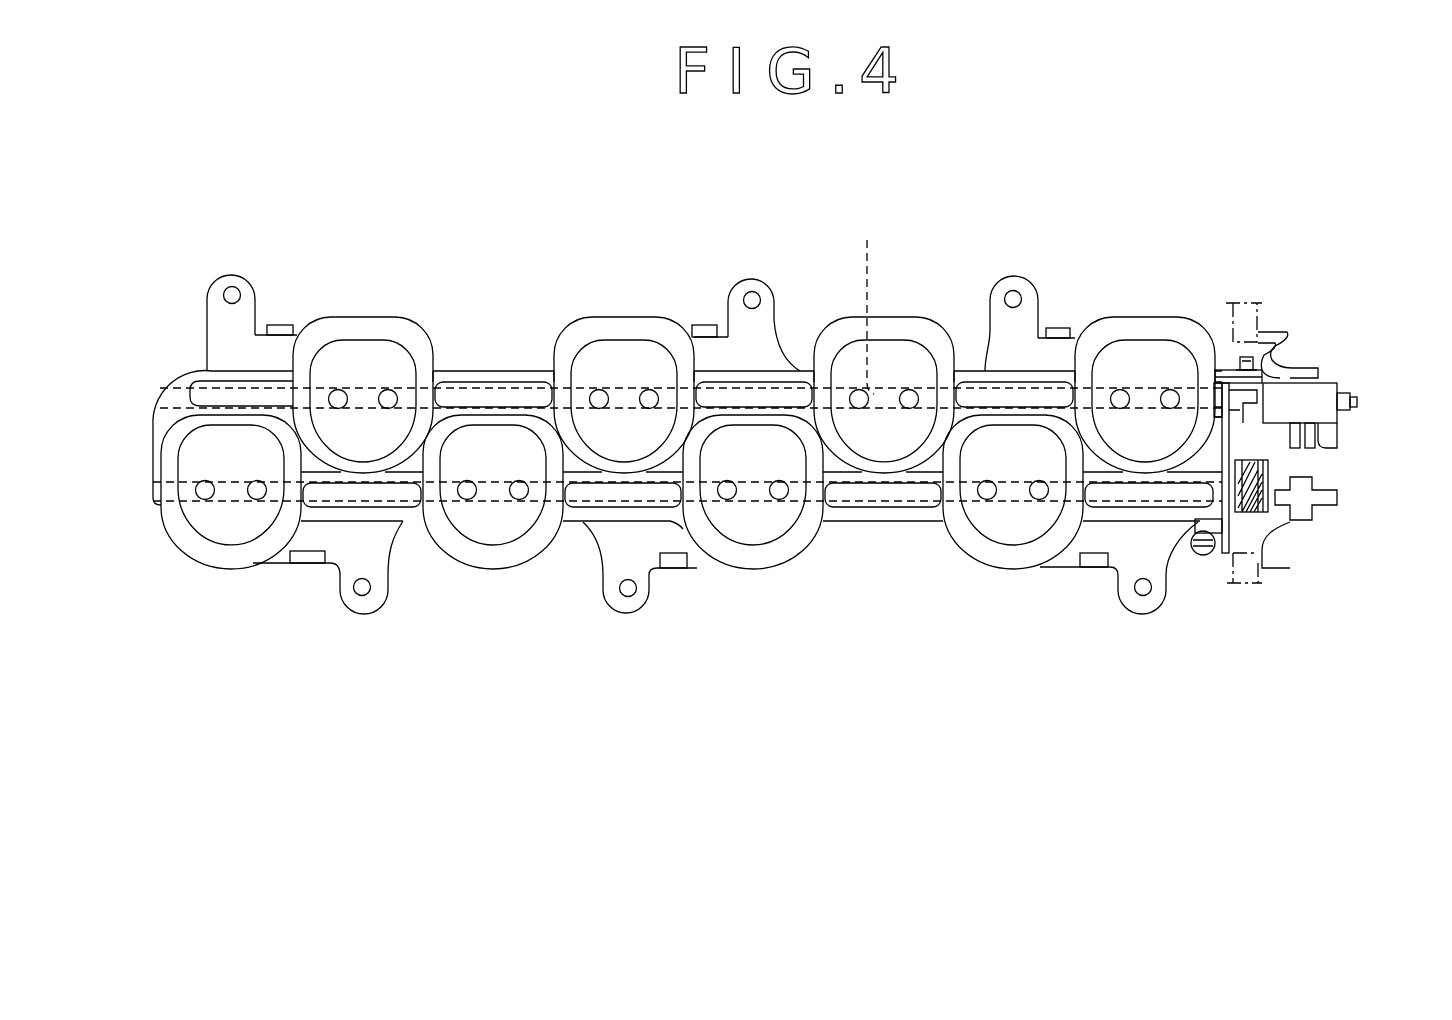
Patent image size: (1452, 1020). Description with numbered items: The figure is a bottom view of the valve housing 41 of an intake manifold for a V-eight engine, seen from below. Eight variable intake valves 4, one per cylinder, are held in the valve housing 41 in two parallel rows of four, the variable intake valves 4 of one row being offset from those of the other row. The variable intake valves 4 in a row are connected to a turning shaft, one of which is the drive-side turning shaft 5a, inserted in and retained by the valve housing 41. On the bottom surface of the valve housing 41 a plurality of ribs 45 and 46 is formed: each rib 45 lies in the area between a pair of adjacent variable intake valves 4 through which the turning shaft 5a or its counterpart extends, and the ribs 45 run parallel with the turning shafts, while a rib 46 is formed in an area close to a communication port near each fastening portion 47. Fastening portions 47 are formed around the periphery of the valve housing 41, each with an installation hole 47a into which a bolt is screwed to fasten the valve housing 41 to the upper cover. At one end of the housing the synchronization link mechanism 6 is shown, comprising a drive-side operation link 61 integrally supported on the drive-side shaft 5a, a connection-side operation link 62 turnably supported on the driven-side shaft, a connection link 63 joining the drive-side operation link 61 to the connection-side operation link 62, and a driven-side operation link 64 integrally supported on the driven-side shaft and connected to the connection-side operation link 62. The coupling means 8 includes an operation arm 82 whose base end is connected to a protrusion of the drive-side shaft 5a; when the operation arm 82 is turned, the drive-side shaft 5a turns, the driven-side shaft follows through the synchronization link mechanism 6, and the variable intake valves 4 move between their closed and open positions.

The variable intake valve 4 is at (362, 355).
The valve housing 41 is at (465, 368).
The rib 45 is at (176, 382).
The rib 46 is at (300, 325).
The fastening portion 47 is at (212, 285).
The installation hole 47a is at (238, 296).
The turning shaft 5a is at (857, 300).
The synchronization link mechanism 6 is at (1270, 508).
The drive-side operation link 61 is at (1277, 362).
The connection-side operation link 62 is at (1265, 515).
The connection link 63 is at (1240, 440).
The driven-side operation link 64 is at (1337, 478).
The coupling means 8 is at (1376, 404).
The operation arm 82 is at (1335, 448).